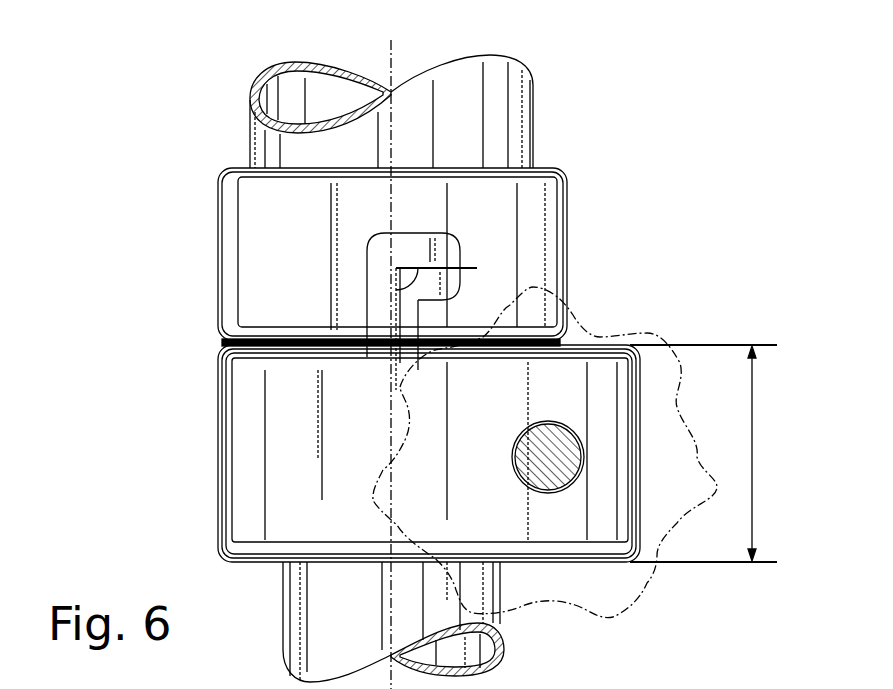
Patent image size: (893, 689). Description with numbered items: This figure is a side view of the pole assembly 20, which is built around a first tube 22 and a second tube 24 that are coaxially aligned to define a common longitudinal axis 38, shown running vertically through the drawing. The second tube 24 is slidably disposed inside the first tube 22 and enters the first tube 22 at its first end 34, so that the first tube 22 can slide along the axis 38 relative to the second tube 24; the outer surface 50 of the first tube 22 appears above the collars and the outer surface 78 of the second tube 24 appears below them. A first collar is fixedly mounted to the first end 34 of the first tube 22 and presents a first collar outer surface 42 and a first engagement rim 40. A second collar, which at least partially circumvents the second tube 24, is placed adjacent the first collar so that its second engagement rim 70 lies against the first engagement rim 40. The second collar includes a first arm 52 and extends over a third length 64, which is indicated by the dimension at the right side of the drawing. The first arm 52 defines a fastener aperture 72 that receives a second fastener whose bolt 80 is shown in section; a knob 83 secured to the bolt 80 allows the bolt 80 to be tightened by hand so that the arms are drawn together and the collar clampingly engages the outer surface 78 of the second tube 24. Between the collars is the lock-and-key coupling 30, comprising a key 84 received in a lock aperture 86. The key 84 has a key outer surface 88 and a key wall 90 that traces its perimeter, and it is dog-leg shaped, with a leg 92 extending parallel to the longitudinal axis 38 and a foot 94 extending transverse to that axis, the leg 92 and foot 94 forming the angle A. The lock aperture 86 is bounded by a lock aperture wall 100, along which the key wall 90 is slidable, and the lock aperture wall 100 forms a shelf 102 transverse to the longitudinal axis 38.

The pole assembly 20 is at (585, 95).
The first tube 22 is at (535, 128).
The second tube 24 is at (283, 641).
The lock-and-key coupling 30 is at (492, 222).
The first end of the first tube 34 is at (190, 348).
The common longitudinal axis 38 is at (391, 55).
The first engagement rim 40 is at (280, 335).
The first collar outer surface 42 is at (268, 258).
The outer surface of the first tube 50 is at (400, 146).
The first arm 52 is at (610, 375).
The third length 64 is at (753, 450).
The second engagement rim 70 is at (305, 358).
The fastener aperture 72 is at (548, 450).
The outer surface of the second tube 78 is at (322, 628).
The bolt 80 is at (548, 468).
The knob 83 is at (690, 495).
The key 84 is at (388, 290).
The lock aperture 86 is at (411, 232).
The key outer surface 88 is at (373, 241).
The key wall 90 is at (441, 233).
The leg 92 is at (372, 318).
The foot 94 is at (456, 254).
The lock aperture wall 100 is at (453, 293).
The shelf 102 is at (430, 303).